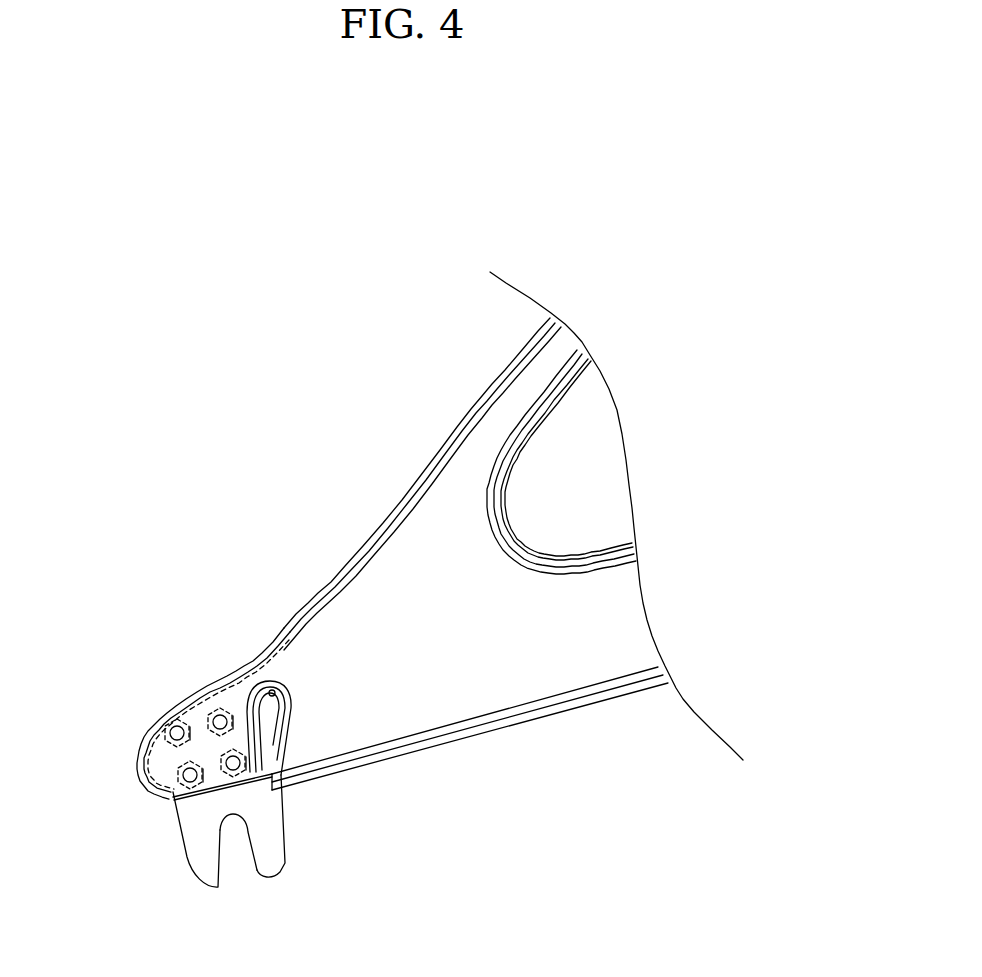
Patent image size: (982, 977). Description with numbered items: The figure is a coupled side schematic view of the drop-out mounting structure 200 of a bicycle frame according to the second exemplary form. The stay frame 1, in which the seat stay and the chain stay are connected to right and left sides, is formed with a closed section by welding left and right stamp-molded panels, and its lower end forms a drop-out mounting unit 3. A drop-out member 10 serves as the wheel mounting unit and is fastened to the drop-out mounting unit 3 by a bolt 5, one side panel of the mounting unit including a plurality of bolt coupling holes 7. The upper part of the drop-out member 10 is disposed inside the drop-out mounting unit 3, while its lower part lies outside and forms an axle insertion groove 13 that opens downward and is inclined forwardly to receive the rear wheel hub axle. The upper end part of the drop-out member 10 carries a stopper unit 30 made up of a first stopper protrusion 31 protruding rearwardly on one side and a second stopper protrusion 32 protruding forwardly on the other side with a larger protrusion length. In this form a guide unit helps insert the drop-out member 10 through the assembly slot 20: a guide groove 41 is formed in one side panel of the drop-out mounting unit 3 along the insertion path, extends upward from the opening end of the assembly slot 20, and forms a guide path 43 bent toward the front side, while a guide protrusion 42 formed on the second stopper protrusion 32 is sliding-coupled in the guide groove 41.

The drop-out mounting structure 200 is at (322, 282).
The stay frame 1 is at (513, 516).
The stopper unit 30 is at (206, 582).
The first stopper protrusion 31 is at (145, 731).
The second stopper protrusion 32 is at (268, 703).
The drop-out mounting unit 3 is at (159, 778).
The bolt 5 is at (188, 737).
The bolt coupling holes 7 is at (240, 780).
The drop-out member 10 is at (187, 826).
The assembly slot 20 is at (198, 797).
The axle insertion groove 13 is at (220, 857).
The guide groove 41 is at (273, 748).
The guide protrusion 42 is at (277, 693).
The guide path 43 is at (278, 729).